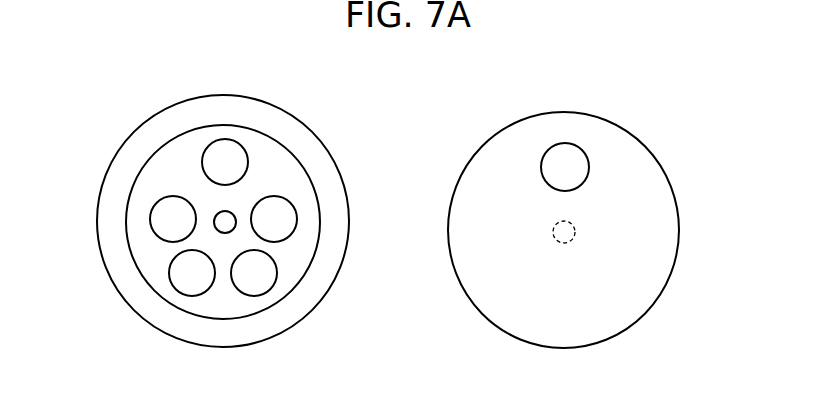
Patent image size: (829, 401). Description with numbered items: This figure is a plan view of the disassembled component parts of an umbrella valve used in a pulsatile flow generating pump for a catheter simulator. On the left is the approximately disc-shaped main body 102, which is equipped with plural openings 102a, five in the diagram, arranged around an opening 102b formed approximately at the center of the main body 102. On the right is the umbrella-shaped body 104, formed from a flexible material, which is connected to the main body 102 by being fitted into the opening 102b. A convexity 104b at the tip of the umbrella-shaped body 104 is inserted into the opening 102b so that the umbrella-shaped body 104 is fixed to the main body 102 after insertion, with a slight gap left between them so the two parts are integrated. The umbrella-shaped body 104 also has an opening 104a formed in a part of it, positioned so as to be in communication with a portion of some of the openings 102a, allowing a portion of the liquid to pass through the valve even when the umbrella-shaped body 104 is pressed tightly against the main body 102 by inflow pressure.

The main body 102 is at (256, 115).
The openings 102a is at (263, 275).
The opening 102b is at (218, 213).
The umbrella-shaped body 104 is at (597, 140).
The opening 104a is at (564, 162).
The convexity 104b is at (567, 235).